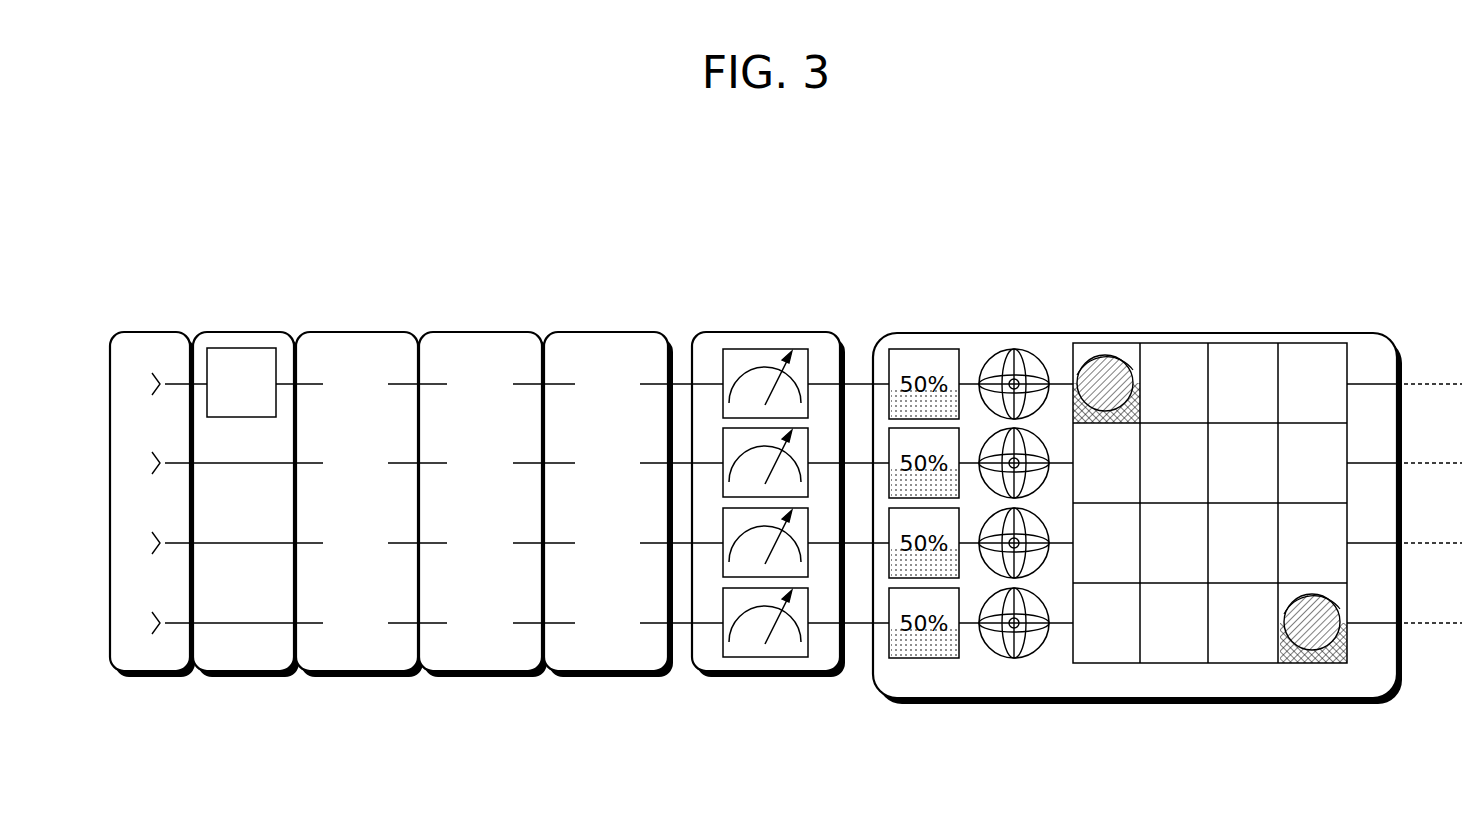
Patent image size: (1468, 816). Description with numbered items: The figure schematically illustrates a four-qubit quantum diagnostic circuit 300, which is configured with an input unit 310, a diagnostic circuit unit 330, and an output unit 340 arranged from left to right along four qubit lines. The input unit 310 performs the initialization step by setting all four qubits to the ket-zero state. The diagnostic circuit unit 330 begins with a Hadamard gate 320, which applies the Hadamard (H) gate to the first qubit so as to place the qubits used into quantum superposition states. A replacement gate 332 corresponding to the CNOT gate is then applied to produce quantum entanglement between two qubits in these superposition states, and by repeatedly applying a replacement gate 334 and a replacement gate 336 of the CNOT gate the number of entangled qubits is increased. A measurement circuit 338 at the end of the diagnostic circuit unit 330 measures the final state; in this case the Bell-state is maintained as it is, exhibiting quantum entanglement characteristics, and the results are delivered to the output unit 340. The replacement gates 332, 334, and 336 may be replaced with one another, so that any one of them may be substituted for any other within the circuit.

The quantum diagnostic circuit 300 is at (1322, 253).
The input unit 310 is at (186, 332).
The Hadamard gate 320 is at (247, 332).
The diagnostic circuit unit 330 is at (516, 510).
The replacement gate 332 is at (362, 332).
The replacement gate 334 is at (487, 332).
The replacement gate 336 is at (612, 332).
The measurement circuit 338 is at (800, 332).
The output unit 340 is at (1172, 333).